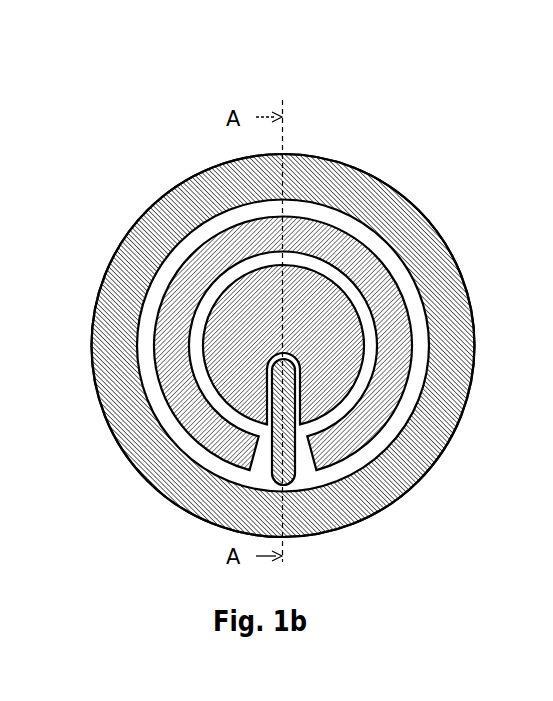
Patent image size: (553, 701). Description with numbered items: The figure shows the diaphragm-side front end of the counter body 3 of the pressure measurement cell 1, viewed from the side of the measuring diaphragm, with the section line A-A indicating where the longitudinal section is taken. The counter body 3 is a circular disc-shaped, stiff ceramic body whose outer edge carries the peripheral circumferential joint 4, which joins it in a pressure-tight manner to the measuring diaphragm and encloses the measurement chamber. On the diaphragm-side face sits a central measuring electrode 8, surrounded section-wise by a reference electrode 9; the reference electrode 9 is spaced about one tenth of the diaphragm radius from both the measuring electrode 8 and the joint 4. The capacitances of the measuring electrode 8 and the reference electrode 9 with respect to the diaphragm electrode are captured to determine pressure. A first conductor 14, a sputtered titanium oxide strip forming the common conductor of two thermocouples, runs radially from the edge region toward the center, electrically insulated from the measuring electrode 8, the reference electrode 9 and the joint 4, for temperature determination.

The pressure measurement cell 1 is at (170, 92).
The counter body 3 is at (427, 481).
The joint 4 is at (394, 193).
The measuring electrode 8 is at (264, 411).
The reference electrode 9 is at (262, 372).
The first conductor 14 is at (293, 484).